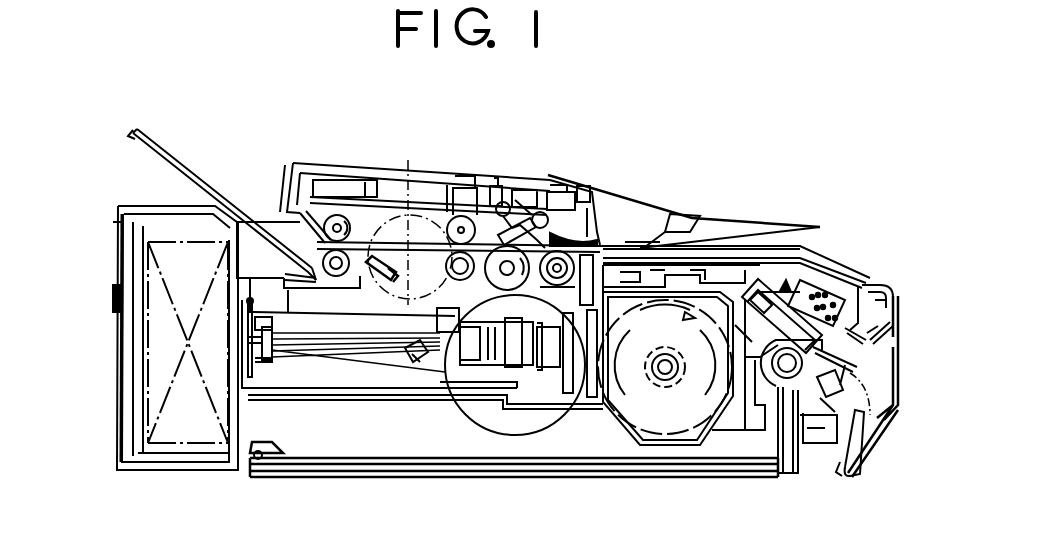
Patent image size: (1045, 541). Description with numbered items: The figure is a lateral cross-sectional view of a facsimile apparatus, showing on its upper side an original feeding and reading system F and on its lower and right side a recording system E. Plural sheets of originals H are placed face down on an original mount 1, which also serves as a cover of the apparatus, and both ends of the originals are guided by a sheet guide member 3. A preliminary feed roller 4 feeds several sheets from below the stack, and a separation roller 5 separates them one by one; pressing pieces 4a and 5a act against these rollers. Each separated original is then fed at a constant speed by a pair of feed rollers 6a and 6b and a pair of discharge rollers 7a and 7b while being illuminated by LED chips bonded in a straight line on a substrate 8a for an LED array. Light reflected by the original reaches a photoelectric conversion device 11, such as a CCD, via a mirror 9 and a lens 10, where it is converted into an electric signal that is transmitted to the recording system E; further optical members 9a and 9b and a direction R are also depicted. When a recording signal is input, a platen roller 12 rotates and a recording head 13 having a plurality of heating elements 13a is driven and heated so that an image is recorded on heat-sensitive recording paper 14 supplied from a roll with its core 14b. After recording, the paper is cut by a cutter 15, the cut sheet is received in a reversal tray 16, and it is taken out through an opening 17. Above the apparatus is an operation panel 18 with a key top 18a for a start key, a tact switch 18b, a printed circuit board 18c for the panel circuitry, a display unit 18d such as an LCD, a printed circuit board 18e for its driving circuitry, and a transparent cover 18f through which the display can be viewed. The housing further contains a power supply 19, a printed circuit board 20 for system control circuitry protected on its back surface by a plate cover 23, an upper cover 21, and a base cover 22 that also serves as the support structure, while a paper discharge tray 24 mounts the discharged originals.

The original mount 1 is at (777, 248).
The sheet guide member 3 is at (700, 217).
The preliminary feed roller 4 is at (582, 290).
The pressing piece 4a is at (594, 256).
The separation roller 5 is at (490, 288).
The pressing piece 5a is at (496, 178).
The feed roller 6a is at (455, 186).
The feed roller 6b is at (502, 201).
The discharge roller 7a is at (340, 278).
The discharge roller 7b is at (348, 215).
The substrate for an LED array 8a is at (387, 295).
The mirror 9 is at (448, 307).
The mirror 9a is at (424, 390).
The mirror 9b is at (275, 367).
The lens 10 is at (470, 385).
The photoelectric conversion device 11 is at (500, 433).
The platen roller 12 is at (775, 420).
The recording head 13 is at (835, 268).
The heating elements 13a is at (868, 282).
The heat-sensitive recording paper 14 is at (622, 410).
The drum shaft 14b is at (660, 385).
The cutter 15 is at (850, 371).
The reversal tray 16 is at (872, 440).
The opening 17 is at (895, 371).
The operation panel 18 is at (424, 172).
The key top 18a is at (512, 180).
The tact switch 18b is at (505, 193).
The printed circuit board 18c is at (468, 174).
The display unit 18d is at (333, 184).
The printed circuit board 18e is at (366, 184).
The transparent cover 18f is at (300, 165).
The power supply 19 is at (114, 222).
The printed circuit board 20 is at (385, 468).
The upper cover 21 is at (113, 288).
The base cover 22 is at (192, 470).
The plate cover 23 is at (476, 480).
The paper discharge tray 24 is at (158, 136).
The recording system E is at (785, 288).
The original feeding and reading system F is at (411, 224).
The originals H is at (718, 240).
The direction R is at (395, 236).